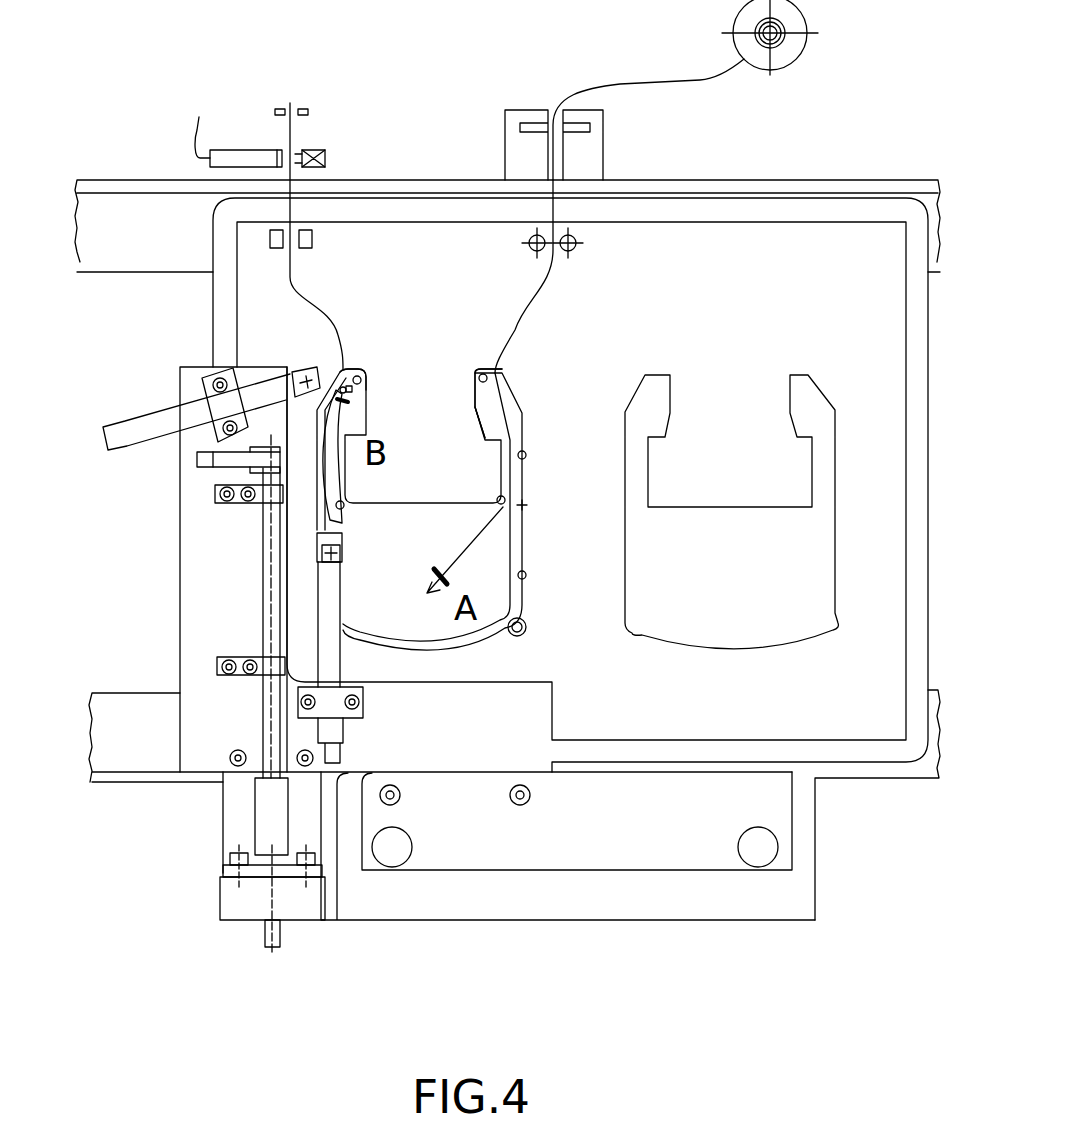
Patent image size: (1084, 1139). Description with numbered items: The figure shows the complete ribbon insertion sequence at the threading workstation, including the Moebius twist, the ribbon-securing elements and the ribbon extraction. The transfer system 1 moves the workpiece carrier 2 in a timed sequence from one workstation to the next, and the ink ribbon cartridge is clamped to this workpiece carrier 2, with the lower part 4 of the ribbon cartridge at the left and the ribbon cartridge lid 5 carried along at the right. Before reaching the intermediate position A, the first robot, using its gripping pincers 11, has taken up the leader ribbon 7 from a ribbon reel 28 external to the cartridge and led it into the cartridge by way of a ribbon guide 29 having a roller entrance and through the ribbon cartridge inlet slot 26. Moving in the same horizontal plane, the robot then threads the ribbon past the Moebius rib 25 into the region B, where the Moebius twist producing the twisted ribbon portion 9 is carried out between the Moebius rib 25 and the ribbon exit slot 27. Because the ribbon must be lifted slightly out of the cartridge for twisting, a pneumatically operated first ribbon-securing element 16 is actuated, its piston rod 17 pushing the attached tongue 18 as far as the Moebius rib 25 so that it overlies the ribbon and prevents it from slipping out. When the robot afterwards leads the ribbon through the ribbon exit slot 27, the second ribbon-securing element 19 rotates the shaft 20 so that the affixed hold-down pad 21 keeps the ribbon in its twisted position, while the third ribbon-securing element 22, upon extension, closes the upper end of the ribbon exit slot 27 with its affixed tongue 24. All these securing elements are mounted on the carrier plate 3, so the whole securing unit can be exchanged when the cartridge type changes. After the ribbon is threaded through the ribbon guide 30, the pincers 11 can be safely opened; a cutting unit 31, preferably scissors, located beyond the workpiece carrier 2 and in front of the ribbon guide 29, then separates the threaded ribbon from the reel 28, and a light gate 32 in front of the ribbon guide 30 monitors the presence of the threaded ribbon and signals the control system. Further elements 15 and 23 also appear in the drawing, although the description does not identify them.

The transfer system 1 is at (103, 220).
The workpiece carrier 2 is at (212, 297).
The carrier plate 3 is at (655, 853).
The lower part of the ribbon cartridge 4 is at (525, 413).
The ribbon cartridge lid 5 is at (677, 617).
The leader ribbon 7 is at (516, 331).
The twisted ribbon portion 9 is at (332, 458).
The gripping pincers 11 is at (307, 110).
The pivot 15 is at (355, 388).
The first ribbon-securing element 16 is at (338, 730).
The piston rod 17 is at (340, 562).
The tongue 18 is at (343, 538).
The second ribbon-securing element 19 is at (235, 905).
The shaft 20 is at (265, 620).
The hold-down pad 21 is at (207, 462).
The third ribbon-securing element 22 is at (128, 413).
The clamp block 23 is at (293, 380).
The tongue 24 is at (308, 372).
The Moebius rib 25 is at (344, 506).
The ribbon cartridge inlet slot 26 is at (495, 373).
The ribbon exit slot 27 is at (345, 372).
The ribbon reel 28 is at (792, 67).
The ribbon guide 29 is at (577, 246).
The ribbon guide 30 is at (313, 238).
The cutting unit 31 is at (549, 160).
The light gate 32 is at (327, 158).